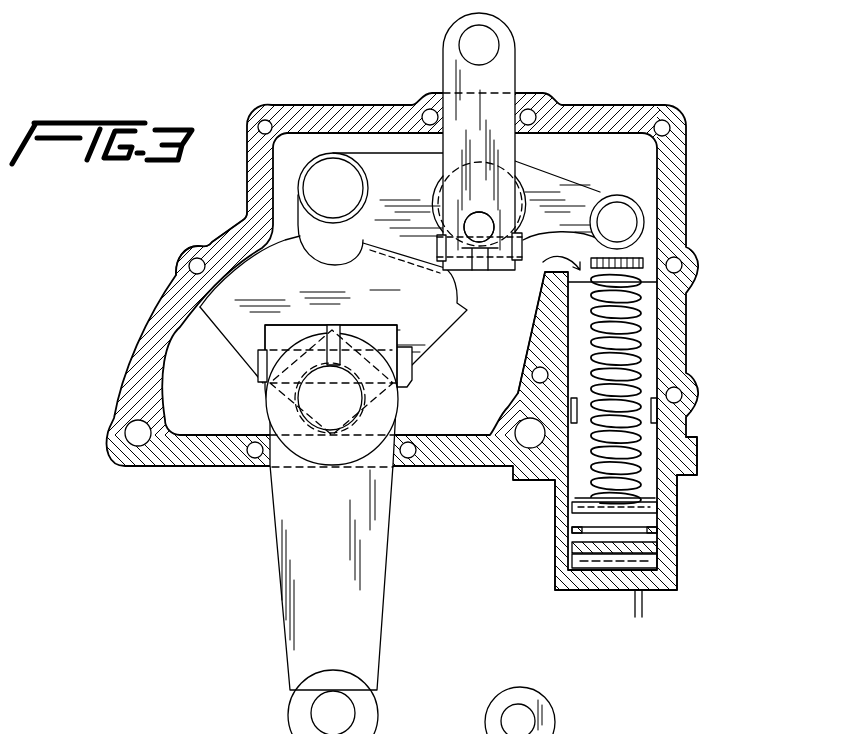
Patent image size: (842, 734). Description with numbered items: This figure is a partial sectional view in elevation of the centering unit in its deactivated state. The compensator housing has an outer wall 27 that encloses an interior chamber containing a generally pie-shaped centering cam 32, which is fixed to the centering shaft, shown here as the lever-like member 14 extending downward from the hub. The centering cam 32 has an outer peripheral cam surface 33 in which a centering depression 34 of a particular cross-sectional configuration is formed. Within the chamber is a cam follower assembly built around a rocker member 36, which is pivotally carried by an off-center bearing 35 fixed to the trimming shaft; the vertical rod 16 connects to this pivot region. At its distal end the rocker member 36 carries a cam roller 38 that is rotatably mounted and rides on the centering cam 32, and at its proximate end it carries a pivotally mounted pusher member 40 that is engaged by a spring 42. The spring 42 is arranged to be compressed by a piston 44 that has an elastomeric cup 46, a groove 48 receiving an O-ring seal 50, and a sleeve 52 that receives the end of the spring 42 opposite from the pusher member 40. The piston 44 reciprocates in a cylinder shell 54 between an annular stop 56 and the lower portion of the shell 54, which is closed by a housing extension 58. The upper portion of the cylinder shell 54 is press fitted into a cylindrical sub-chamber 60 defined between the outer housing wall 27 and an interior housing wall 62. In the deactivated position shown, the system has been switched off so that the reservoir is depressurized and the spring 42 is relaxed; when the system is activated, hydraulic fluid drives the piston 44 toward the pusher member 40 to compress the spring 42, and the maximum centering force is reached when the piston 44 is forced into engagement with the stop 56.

The lever 14 is at (329, 529).
The rod 16 is at (517, 60).
The outer wall 27 is at (688, 312).
The centering cam 32 is at (333, 309).
The outer peripheral cam surface 33 is at (466, 298).
The centering depression 34 is at (243, 223).
The off-center bearing 35 is at (518, 190).
The rocker member 36 is at (573, 178).
The cam roller 38 is at (388, 155).
The pusher member 40 is at (655, 256).
The spring 42 is at (643, 354).
The piston 44 is at (650, 503).
The elastomeric cup 46 is at (573, 563).
The groove 48 is at (595, 538).
The O-ring seal 50 is at (572, 528).
The sleeve 52 is at (572, 508).
The cylinder shell 54 is at (698, 440).
The annular stop 56 is at (660, 418).
The housing extension 58 is at (678, 568).
The cylindrical sub-chamber 60 is at (545, 274).
The interior housing wall 62 is at (537, 332).